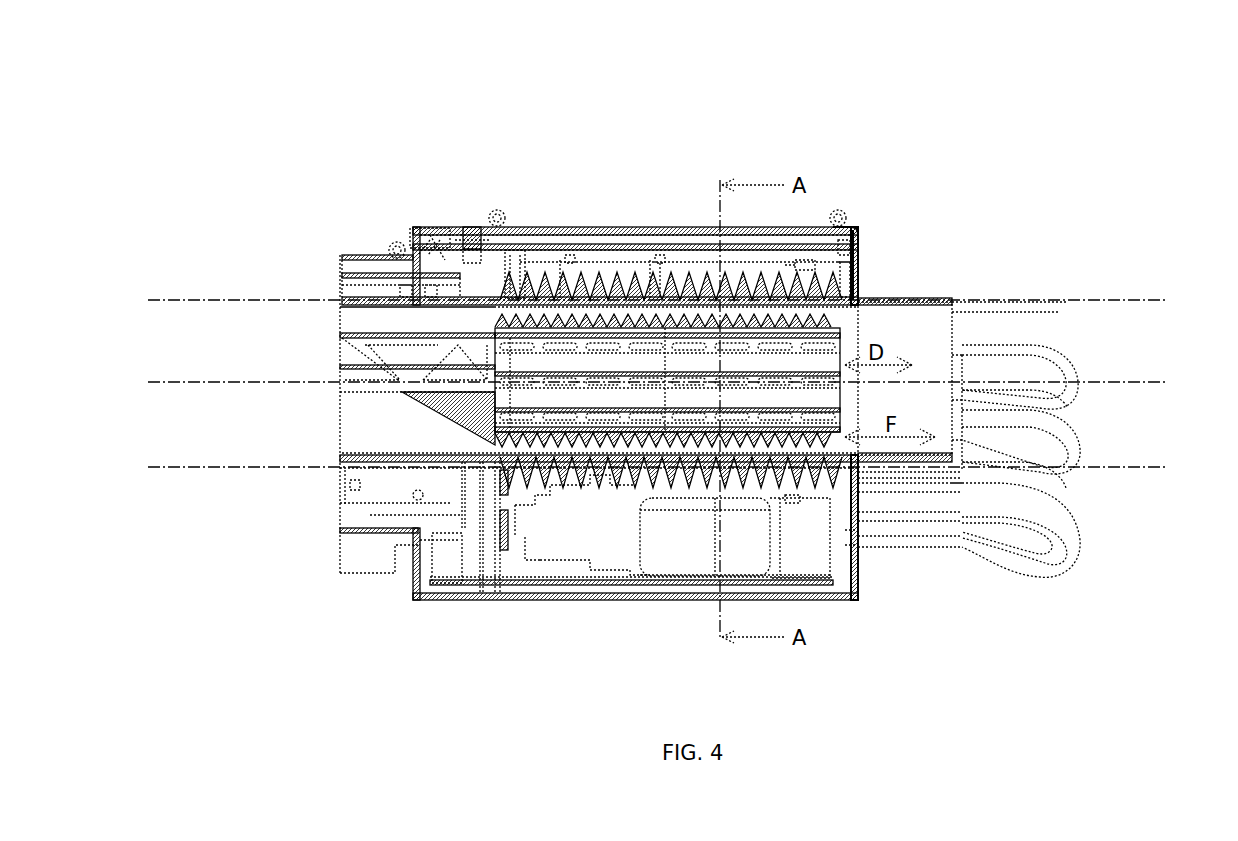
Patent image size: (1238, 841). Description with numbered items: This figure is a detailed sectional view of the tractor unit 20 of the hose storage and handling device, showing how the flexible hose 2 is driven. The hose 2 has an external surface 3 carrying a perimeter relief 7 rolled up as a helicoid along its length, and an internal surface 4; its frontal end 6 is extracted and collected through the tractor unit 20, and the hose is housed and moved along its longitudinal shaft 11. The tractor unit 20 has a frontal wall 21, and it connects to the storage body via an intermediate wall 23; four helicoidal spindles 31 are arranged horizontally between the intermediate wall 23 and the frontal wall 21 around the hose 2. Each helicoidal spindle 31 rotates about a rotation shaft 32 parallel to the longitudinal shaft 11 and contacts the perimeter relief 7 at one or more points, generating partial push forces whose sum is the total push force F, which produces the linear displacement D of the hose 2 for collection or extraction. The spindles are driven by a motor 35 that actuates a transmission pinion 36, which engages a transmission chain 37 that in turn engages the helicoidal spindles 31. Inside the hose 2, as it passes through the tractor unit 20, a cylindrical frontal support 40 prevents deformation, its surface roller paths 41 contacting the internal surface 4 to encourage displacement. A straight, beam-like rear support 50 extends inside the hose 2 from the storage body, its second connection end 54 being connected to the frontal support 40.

The flexible hose 2 is at (888, 297).
The external surface 3 is at (925, 297).
The internal surface 4 is at (893, 305).
The frontal end 6 is at (1063, 297).
The perimeter relief 7 is at (880, 478).
The longitudinal shaft 11 is at (1120, 380).
The tractor unit 20 is at (604, 228).
The frontal wall 21 is at (857, 238).
The intermediate wall 23 is at (478, 262).
The helicoidal spindle 31 is at (526, 272).
The rotation shaft 32 is at (1085, 468).
The motor 35 is at (613, 550).
The transmission pinion 36 is at (515, 552).
The transmission chain 37 is at (511, 548).
The frontal support 40 is at (878, 295).
The surface roller paths 41 is at (685, 262).
The rear support 50 is at (400, 383).
The second connection end 54 is at (470, 428).